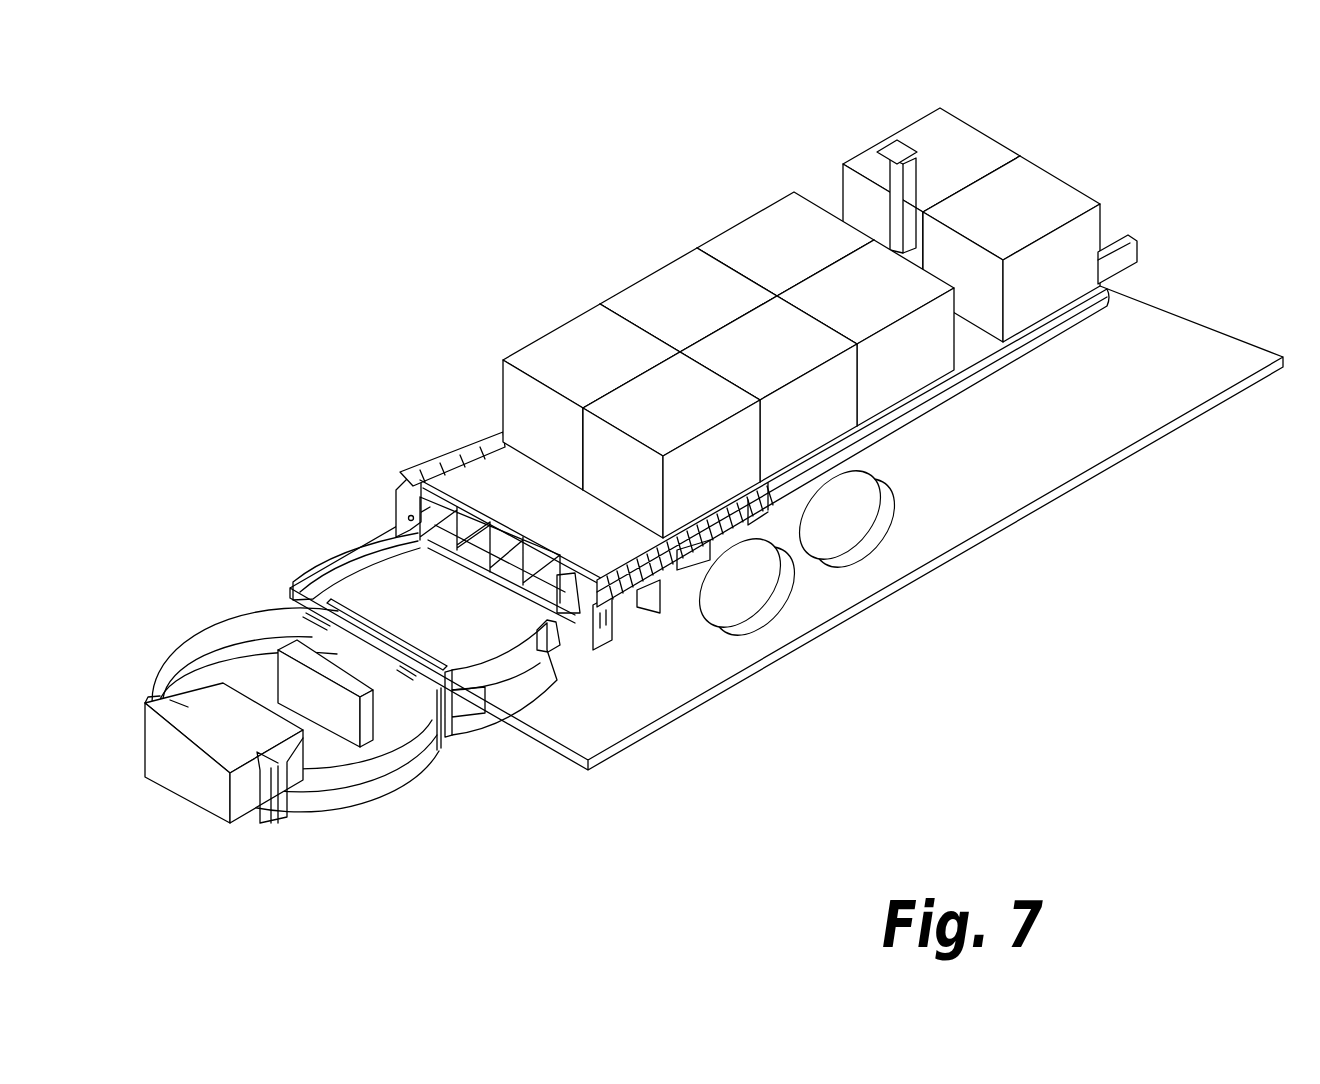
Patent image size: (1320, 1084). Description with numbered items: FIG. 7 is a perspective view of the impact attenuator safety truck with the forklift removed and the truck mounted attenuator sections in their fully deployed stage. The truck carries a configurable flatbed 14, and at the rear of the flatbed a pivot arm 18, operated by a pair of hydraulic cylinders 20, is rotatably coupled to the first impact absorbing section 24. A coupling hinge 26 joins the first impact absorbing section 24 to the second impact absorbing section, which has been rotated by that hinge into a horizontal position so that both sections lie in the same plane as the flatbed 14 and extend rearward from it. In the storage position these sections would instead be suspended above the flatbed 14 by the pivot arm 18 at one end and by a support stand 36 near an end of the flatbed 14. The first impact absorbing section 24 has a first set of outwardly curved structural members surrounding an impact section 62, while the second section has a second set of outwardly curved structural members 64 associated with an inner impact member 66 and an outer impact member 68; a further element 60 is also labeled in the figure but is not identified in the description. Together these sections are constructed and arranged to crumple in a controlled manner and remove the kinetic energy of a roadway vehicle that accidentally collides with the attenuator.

The configurable flatbed 14 is at (977, 355).
The pivot arm 18 is at (673, 603).
The hydraulic cylinders 20 is at (787, 553).
The first impact absorbing section 24 is at (338, 545).
The coupling hinge 26 is at (208, 585).
The support stand 36 is at (893, 150).
The curved guide segment 60 is at (503, 720).
The impact section 62 is at (493, 650).
The second set of outwardly curved structural members 64 is at (350, 807).
The inner impact member 66 is at (303, 645).
The outer impact member 68 is at (243, 760).